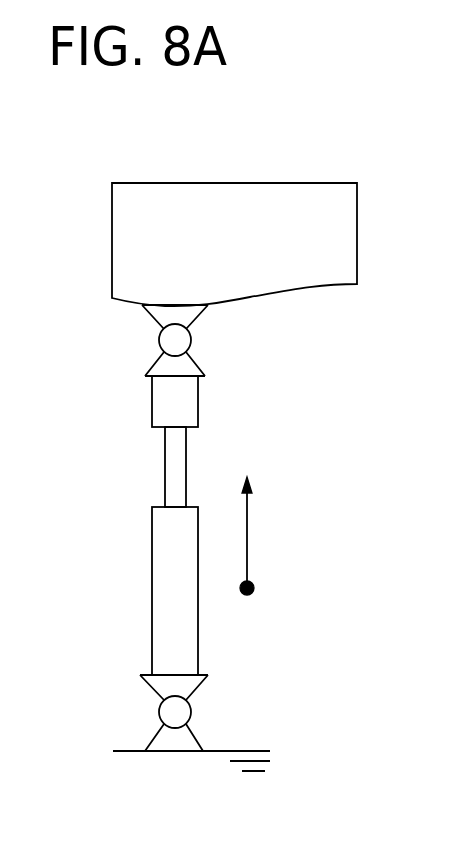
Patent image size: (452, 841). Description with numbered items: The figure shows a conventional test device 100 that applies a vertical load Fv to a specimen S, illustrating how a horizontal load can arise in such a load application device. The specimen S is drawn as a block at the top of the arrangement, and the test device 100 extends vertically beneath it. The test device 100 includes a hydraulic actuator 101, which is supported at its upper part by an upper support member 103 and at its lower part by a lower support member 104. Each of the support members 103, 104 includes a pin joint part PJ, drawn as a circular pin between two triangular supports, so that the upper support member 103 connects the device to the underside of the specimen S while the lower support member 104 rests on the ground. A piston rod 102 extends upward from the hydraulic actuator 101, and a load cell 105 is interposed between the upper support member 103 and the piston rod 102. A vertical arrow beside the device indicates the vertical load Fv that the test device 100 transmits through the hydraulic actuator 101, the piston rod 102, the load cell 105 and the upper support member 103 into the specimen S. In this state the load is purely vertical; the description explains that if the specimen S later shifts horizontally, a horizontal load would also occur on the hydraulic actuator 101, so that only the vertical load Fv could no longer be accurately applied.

The specimen S is at (301, 183).
The test device 100 is at (99, 467).
The pin joint part PJ is at (183, 538).
The upper support member 103 is at (200, 318).
The lower support member 104 is at (197, 688).
The load cell 105 is at (198, 398).
The piston rod 102 is at (186, 462).
The hydraulic actuator 101 is at (152, 580).
The vertical load Fv is at (249, 536).